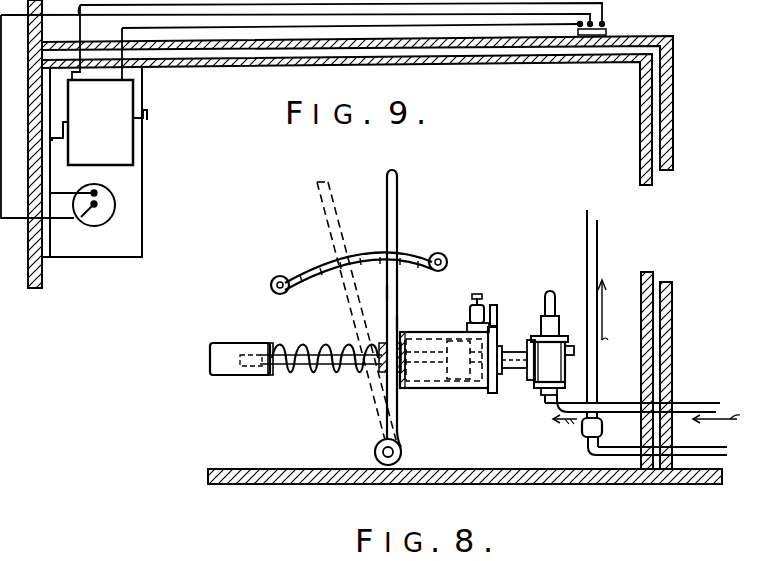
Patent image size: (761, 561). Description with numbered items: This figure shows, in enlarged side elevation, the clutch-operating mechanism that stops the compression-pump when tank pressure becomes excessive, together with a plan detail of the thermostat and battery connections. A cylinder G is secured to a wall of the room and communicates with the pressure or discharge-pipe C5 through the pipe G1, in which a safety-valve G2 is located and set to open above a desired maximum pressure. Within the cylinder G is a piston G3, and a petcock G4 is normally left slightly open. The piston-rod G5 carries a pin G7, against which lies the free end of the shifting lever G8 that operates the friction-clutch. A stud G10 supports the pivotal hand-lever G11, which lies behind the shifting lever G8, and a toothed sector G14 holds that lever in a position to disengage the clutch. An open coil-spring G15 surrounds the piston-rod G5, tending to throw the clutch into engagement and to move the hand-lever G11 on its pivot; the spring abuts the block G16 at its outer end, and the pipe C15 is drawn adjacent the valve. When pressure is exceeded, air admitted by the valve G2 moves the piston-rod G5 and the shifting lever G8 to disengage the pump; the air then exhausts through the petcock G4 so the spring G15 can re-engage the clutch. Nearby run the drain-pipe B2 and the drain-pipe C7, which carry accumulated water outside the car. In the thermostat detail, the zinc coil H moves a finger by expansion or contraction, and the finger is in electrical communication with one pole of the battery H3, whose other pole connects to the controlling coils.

In FIG. 9, the zinc coil H is at (604, 22).
In FIG. 9, the battery H3 is at (101, 219).
In FIG. 8, the cylinder G is at (435, 370).
In FIG. 8, the pipe G1 is at (545, 404).
In FIG. 8, the safety-valve G2 is at (574, 348).
In FIG. 8, the piston G3 is at (462, 368).
In FIG. 8, the petcock G4 is at (480, 308).
In FIG. 8, the piston-rod G5 is at (426, 337).
In FIG. 8, the pin G7 is at (398, 320).
In FIG. 8, the shifting lever G8 is at (359, 308).
In FIG. 8, the stud G10 is at (401, 452).
In FIG. 8, the hand-lever G11 is at (391, 292).
In FIG. 8, the toothed sector G14 is at (368, 248).
In FIG. 8, the open coil-spring G15 is at (342, 373).
In FIG. 8, the spring abutment G16 is at (271, 376).
In FIG. 8, the discharge-pipe C5 is at (686, 407).
In FIG. 8, the drain-pipe C7 is at (583, 447).
In FIG. 8, the branch pipe C15 is at (592, 250).
In FIG. 8, the drain-pipe B2 is at (710, 449).